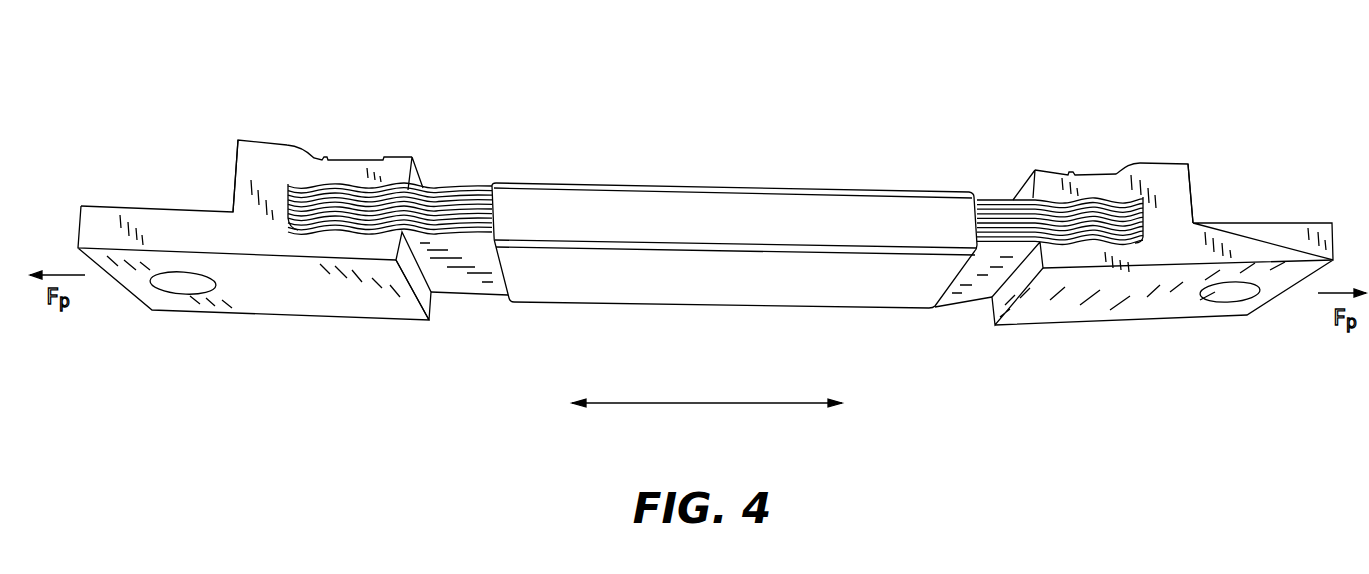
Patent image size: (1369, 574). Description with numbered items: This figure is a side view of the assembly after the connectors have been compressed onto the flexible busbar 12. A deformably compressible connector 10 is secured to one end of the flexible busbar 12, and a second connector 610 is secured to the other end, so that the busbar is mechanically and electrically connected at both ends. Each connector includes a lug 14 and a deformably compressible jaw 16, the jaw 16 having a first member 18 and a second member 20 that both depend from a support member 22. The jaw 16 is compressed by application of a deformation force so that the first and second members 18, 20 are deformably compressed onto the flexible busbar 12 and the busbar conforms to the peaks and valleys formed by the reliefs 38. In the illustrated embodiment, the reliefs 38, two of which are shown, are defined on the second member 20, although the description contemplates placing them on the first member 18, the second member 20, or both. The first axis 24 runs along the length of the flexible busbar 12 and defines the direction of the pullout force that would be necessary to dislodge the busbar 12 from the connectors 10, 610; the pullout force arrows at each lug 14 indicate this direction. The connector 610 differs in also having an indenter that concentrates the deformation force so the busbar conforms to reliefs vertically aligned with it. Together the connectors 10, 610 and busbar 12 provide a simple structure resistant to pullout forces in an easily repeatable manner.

The deformably compressible connector 10 is at (1163, 135).
The connector 610 is at (338, 98).
The flexible busbar 12 is at (752, 122).
The lug 14 is at (137, 223).
The deformably compressible jaw 16 is at (415, 268).
The first member 18 is at (355, 175).
The second member 20 is at (333, 248).
The support member 22 is at (260, 160).
The first axis 24 is at (707, 417).
The reliefs 38 is at (302, 234).